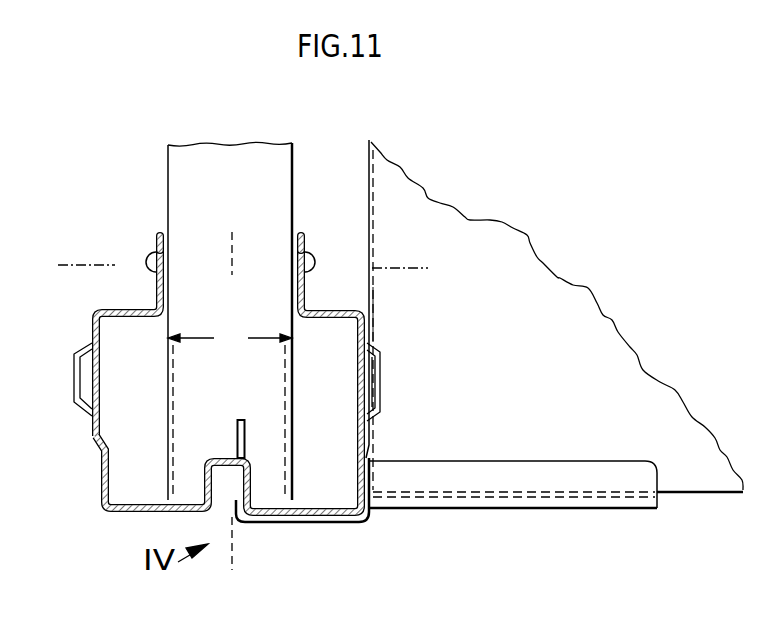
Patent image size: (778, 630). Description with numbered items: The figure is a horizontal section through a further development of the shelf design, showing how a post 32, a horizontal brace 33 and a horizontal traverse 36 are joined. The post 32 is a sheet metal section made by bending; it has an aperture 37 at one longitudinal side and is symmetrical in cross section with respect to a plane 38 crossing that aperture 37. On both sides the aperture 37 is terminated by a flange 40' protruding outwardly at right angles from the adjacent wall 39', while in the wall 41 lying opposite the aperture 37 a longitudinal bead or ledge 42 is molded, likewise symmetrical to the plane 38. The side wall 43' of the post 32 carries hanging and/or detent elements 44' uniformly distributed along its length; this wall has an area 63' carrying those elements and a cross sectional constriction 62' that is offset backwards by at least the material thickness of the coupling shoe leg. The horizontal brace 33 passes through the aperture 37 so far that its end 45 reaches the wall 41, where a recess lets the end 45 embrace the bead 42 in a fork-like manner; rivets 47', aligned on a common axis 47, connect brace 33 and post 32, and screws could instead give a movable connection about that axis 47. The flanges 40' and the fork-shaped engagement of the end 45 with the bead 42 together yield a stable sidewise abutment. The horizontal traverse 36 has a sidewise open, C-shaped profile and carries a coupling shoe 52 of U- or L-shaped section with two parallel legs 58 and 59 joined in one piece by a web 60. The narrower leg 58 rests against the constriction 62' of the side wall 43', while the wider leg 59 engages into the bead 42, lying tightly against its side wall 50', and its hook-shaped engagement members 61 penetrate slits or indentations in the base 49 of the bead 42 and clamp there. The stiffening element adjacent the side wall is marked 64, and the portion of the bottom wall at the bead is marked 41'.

The post 32 is at (237, 381).
The horizontal brace 33 is at (280, 178).
The horizontal traverse 36 is at (550, 501).
The aperture 37 is at (230, 341).
The plane 38 is at (233, 230).
The wall 39' is at (142, 307).
The flange 40' is at (134, 218).
The wall 41 is at (233, 482).
The left bottom web portion 41' is at (145, 525).
The longitudinal bead or ledge 42 is at (226, 492).
The side wall 43' is at (73, 455).
The hanging and/or detent element 44' is at (59, 379).
The end 45 is at (252, 429).
The common axis 47 is at (244, 262).
The rivet 47' is at (127, 279).
The base 49 is at (225, 455).
The side wall 50' is at (201, 441).
The coupling shoe 52 is at (372, 523).
The leg 58 is at (372, 482).
The leg 59 is at (238, 524).
The web 60 is at (340, 524).
The engagement member 61 is at (243, 418).
The cross sectional constriction 62' is at (125, 428).
The area 63' is at (126, 359).
The strip 64 is at (378, 318).